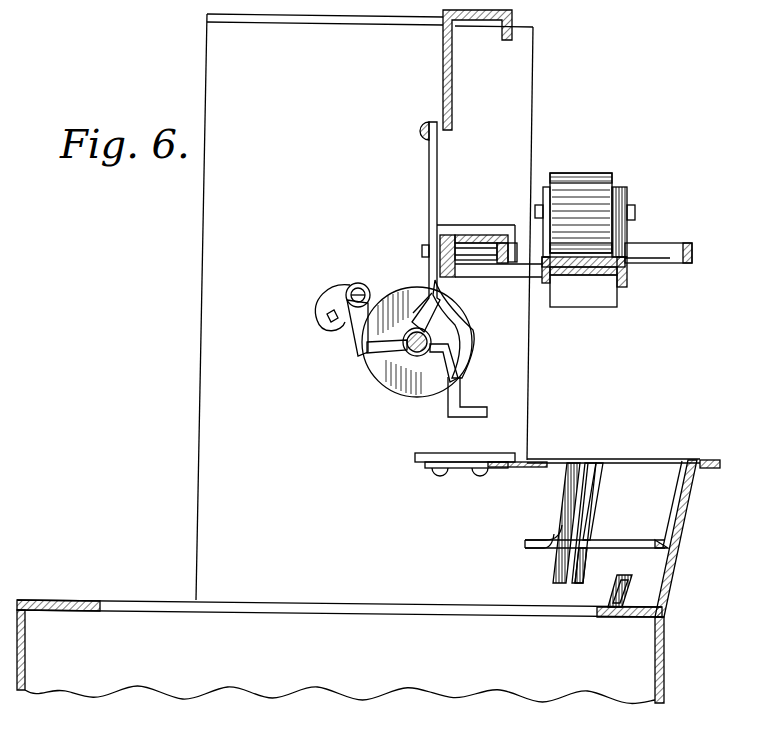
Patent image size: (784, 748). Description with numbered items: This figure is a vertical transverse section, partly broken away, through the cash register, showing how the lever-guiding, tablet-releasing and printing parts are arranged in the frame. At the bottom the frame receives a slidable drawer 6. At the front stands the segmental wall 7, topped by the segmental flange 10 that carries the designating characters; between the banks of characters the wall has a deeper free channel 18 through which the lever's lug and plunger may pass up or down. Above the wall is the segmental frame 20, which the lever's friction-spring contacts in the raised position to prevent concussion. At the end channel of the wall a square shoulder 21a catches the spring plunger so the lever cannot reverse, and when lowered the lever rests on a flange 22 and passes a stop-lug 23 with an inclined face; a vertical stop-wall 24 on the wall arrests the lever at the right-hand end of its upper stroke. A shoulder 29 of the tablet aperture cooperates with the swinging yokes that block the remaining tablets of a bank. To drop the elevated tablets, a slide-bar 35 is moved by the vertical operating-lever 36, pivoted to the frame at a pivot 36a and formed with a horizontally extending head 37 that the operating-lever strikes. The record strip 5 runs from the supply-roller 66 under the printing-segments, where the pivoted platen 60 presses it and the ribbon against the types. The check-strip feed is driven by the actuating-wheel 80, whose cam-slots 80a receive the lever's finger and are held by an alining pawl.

The detail or record strip 5 is at (580, 173).
The slidable drawer 6 is at (668, 640).
The segmental wall 7 is at (696, 503).
The segmental flange 10 is at (722, 465).
The groove or channel 18 is at (669, 545).
The segmental frame 20 is at (692, 246).
The square shoulder 21a is at (586, 567).
The flange 22 is at (613, 618).
The stop-lug 23 is at (623, 598).
The stop-wall 24 is at (561, 498).
The carriage 29 is at (527, 470).
The slide-bar 35 is at (425, 136).
The vertical operating-lever 36 is at (429, 190).
The pivot 36a is at (422, 250).
The horizontally-extending head 37 is at (470, 416).
The platen 60 is at (593, 277).
The supply-roller 66 is at (637, 213).
The actuating-wheel 80 is at (468, 325).
The cam-slots 80a is at (443, 360).